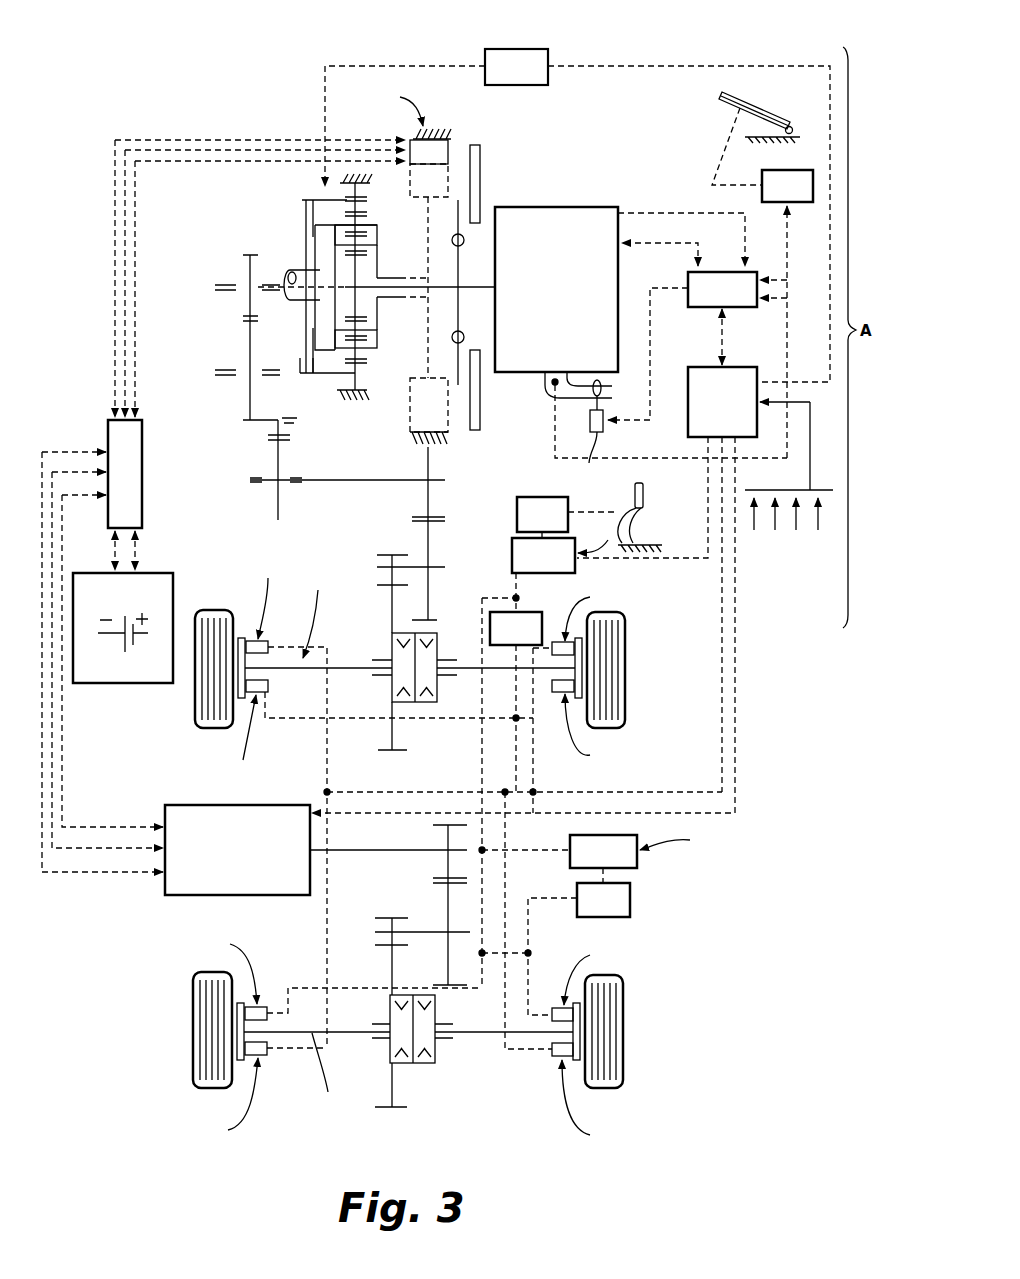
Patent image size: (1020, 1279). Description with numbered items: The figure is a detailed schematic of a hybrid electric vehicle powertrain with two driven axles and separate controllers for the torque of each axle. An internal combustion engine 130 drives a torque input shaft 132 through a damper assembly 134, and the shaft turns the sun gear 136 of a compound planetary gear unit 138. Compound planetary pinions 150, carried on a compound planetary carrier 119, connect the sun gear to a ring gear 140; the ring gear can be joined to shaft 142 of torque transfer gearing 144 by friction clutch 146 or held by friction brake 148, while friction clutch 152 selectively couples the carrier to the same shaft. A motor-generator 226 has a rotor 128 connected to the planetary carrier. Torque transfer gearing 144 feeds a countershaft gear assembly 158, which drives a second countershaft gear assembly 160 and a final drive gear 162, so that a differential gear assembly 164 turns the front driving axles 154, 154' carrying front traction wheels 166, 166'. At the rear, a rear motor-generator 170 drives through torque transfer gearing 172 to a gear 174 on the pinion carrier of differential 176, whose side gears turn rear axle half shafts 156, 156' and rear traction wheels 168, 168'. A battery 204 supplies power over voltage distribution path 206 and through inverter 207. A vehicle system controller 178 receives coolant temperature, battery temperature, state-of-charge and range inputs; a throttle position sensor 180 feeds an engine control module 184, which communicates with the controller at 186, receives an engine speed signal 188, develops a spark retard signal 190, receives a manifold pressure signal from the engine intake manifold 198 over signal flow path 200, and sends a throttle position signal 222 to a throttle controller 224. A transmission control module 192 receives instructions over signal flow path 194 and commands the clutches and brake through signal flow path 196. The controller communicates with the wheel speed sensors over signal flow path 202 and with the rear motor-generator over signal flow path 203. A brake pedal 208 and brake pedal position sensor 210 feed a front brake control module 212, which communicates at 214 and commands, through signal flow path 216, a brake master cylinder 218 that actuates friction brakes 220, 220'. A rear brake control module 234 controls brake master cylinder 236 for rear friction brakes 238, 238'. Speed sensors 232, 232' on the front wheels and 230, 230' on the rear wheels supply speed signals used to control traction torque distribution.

The compound planetary carrier 119 is at (337, 222).
The rotor 128 is at (447, 171).
The internal combustion engine 130 is at (568, 207).
The torque input shaft 132 is at (446, 285).
The damper assembly 134 is at (452, 341).
The sun gear 136 is at (347, 268).
The compound planetary gear unit 138 is at (297, 200).
The ring gear 140 is at (360, 364).
The shaft 142 is at (280, 282).
The torque transfer gearing 144 is at (245, 300).
The friction clutch 146 is at (312, 378).
The friction brake 148 is at (372, 196).
The compound planetary pinions 150 is at (343, 326).
The friction clutch 152 is at (322, 236).
The front driving axle 154 is at (318, 610).
The companion front drive axle 154' is at (506, 650).
The rear driving axle 156 is at (317, 1080).
The rear driving axle 156' is at (504, 1056).
The countershaft gear assembly 158 is at (338, 482).
The second countershaft gear assembly 160 is at (418, 566).
The final drive gear 162 is at (395, 735).
The differential gear assembly 164 is at (437, 703).
The front traction wheel 166 is at (204, 684).
The front traction wheel 166' is at (636, 670).
The rear traction wheel 168 is at (203, 1046).
The rear traction wheel 168' is at (619, 1048).
The rear motor-generator 170 is at (240, 897).
The torque transfer gearing 172 is at (448, 908).
The gear 174 is at (390, 968).
The differential 176 is at (430, 1065).
The vehicle system controller 178 is at (688, 398).
The throttle position sensor 180 is at (800, 203).
The engine control module 184 is at (727, 318).
The communication link 186 is at (718, 336).
The engine speed signal 188 is at (698, 208).
The spark retard signal 190 is at (685, 247).
The transmission control module 192 is at (518, 49).
The signal flow path 194 is at (602, 65).
The signal flow path 196 is at (350, 63).
The engine intake manifold 198 is at (553, 383).
The signal flow path 200 is at (757, 461).
The signal flow path 202 is at (744, 773).
The signal flow path 203 is at (744, 731).
The battery 204 is at (132, 684).
The voltage distribution path 206 is at (63, 762).
The inverter 207 is at (142, 452).
The brake pedal 208 is at (765, 101).
The brake pedal position sensor 210 is at (517, 510).
The front brake control module 212 is at (512, 555).
The communication path 214 is at (698, 566).
The signal flow path 216 is at (507, 585).
The brake master cylinder 218 is at (482, 612).
The friction wheel brake actuator 220 is at (261, 741).
The friction wheel brake actuator 220' is at (611, 737).
The throttle position signal 222 is at (628, 425).
The throttle controller 224 is at (588, 436).
The motor-generator 226 is at (456, 145).
The rear left wheel speed sensor 230 is at (239, 1106).
The rear right wheel speed sensor 230' is at (582, 1107).
The front wheel speed sensor 232 is at (262, 791).
The front wheel speed sensor 232' is at (596, 613).
The rear brake control module 234 is at (638, 858).
The brake master cylinder 236 is at (630, 900).
The rear friction brake 238 is at (313, 967).
The rear friction brake 238' is at (608, 974).